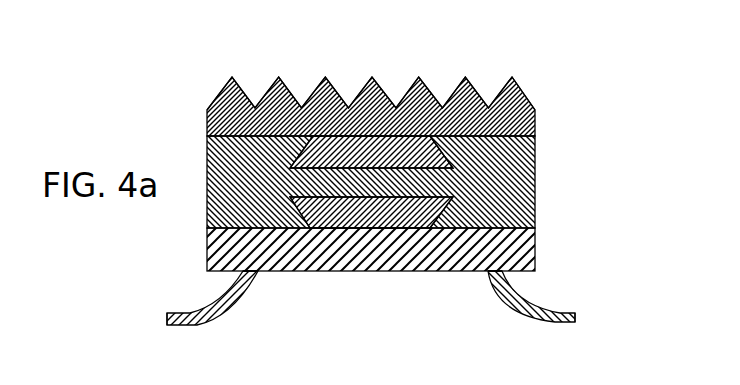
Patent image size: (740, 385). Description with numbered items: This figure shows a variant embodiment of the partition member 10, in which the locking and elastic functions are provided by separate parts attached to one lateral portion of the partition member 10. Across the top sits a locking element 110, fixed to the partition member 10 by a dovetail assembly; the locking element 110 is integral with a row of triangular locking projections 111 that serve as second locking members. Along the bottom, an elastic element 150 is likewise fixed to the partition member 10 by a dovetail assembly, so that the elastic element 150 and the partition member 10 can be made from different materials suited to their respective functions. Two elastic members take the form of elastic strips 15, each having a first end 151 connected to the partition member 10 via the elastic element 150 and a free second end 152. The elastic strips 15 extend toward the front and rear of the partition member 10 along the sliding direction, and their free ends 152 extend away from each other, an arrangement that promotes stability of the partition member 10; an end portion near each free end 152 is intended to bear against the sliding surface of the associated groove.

The partition member 10 is at (520, 180).
The locking element 110 is at (520, 123).
The locking projections 111 is at (505, 90).
The elastic element 150 is at (515, 255).
The elastic strip 15 is at (213, 310).
The first end 151 is at (250, 280).
The free second end 152 is at (167, 320).